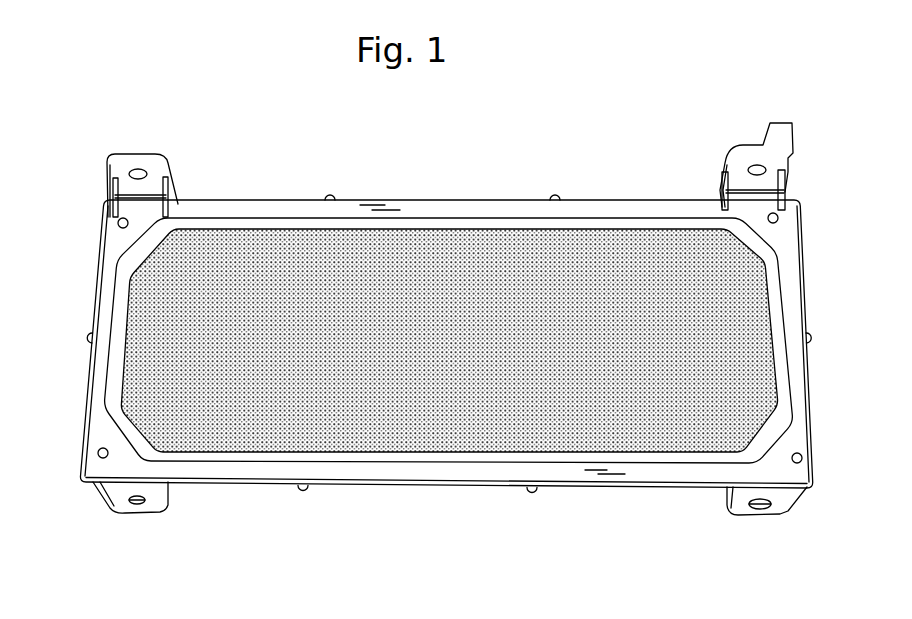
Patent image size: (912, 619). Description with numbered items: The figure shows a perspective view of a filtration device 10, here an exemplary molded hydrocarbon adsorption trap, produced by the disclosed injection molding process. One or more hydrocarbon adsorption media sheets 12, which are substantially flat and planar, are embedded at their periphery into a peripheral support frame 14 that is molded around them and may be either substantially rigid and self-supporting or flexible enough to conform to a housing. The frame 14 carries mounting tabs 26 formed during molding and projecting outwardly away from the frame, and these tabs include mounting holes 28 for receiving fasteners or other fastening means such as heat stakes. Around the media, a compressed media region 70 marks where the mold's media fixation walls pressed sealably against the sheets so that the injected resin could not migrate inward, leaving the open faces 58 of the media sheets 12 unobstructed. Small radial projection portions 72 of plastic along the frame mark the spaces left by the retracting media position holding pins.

The filtration device 10 is at (72, 243).
The hydrocarbon adsorption media sheets 12 is at (486, 288).
The peripheral support frame 14 is at (213, 472).
The mounting tabs 26 is at (123, 153).
The mounting holes 28 is at (140, 175).
The open faces 58 is at (292, 255).
The compressed media region 70 is at (773, 252).
The radial projection portions 72 is at (557, 200).